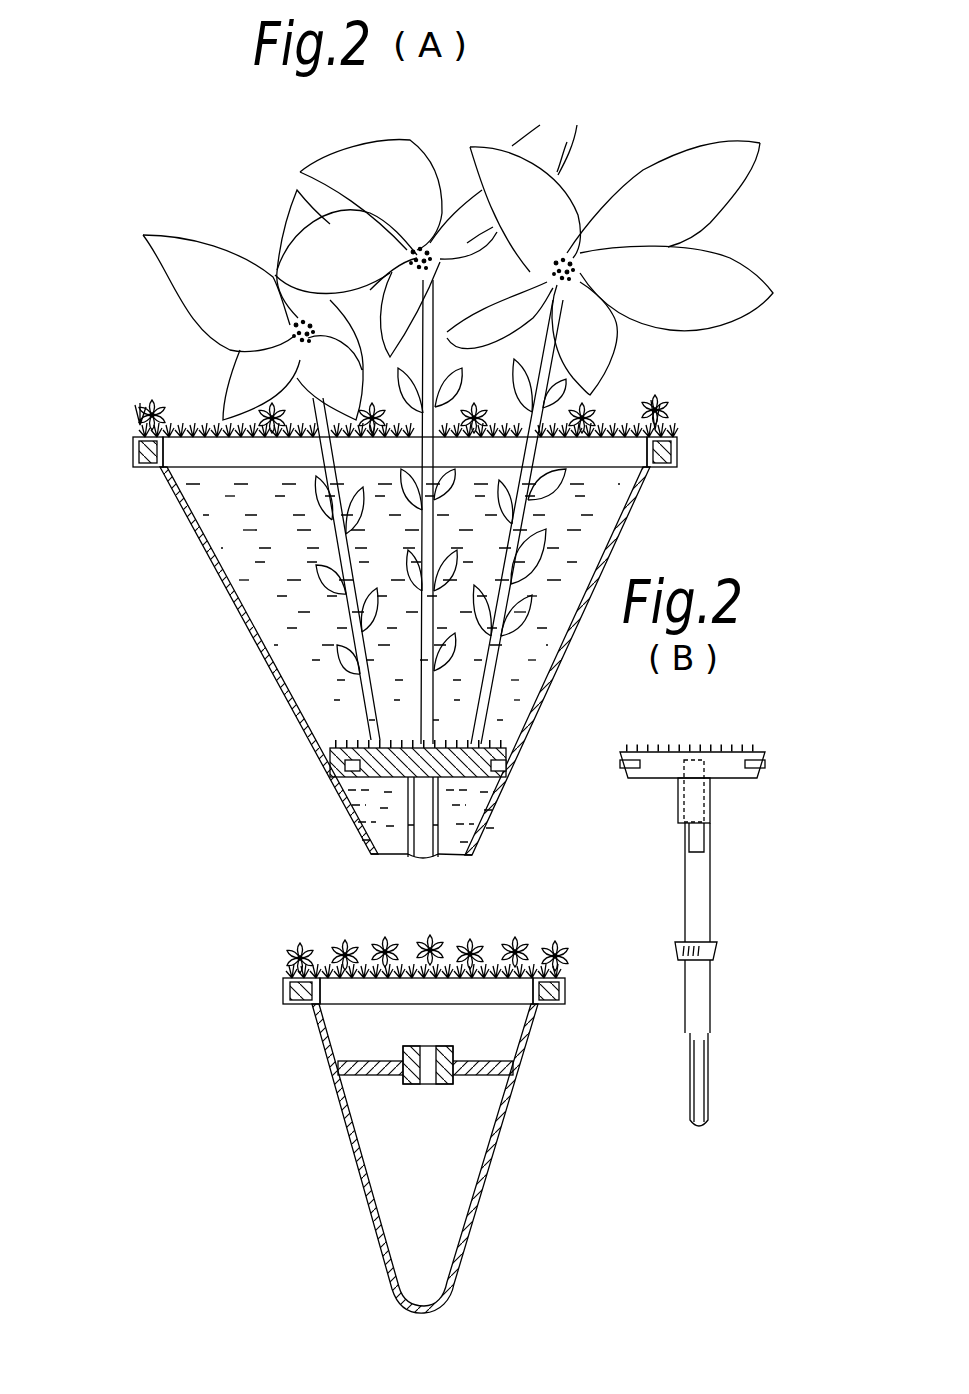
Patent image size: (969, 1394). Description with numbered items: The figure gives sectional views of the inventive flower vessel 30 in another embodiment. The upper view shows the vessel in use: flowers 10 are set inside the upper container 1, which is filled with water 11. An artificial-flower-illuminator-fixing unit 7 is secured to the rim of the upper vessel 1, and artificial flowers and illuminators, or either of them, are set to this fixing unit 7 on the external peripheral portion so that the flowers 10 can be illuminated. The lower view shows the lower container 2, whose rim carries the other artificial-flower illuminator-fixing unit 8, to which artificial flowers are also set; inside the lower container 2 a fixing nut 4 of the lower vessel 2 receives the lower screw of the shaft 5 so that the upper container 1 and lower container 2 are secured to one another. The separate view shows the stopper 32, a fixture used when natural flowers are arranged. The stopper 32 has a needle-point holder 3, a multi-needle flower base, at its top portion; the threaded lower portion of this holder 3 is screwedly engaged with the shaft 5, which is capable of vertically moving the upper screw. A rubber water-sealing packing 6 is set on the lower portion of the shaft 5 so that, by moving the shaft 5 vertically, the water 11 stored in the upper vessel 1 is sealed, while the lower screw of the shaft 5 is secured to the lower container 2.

In FIG. 2A, the upper container 1 is at (275, 681).
In FIG. 2B, the lower container 2 is at (353, 1180).
In FIG. 2B, the needle-point holder 3 is at (703, 747).
In FIG. 2B, the fixing nut 4 is at (430, 1048).
In FIG. 2B, the shaft 5 is at (700, 890).
In FIG. 2B, the water-sealing packing 6 is at (707, 950).
In FIG. 2A, the artificial-flower-illuminator-fixing unit 7 is at (653, 398).
In FIG. 2B, the artificial-flower illuminator-fixing unit 8 is at (438, 942).
In FIG. 2A, the flowers 10 is at (717, 272).
In FIG. 2A, the water 11 is at (571, 566).
In FIG. 2A, the flower vessel 30 is at (103, 316).
In FIG. 2B, the stopper 32 is at (782, 758).